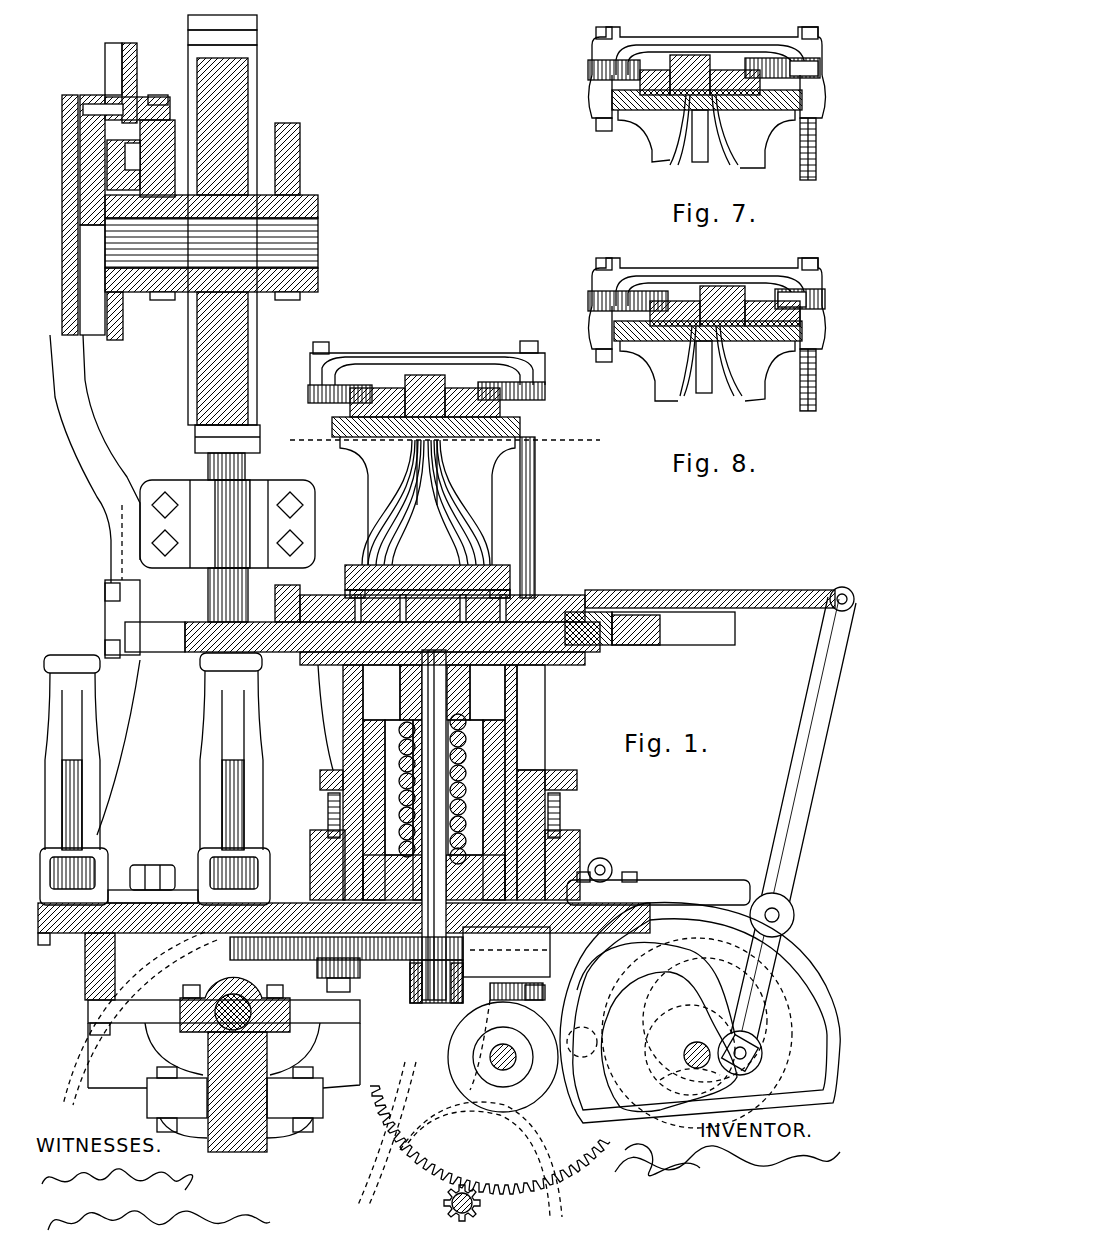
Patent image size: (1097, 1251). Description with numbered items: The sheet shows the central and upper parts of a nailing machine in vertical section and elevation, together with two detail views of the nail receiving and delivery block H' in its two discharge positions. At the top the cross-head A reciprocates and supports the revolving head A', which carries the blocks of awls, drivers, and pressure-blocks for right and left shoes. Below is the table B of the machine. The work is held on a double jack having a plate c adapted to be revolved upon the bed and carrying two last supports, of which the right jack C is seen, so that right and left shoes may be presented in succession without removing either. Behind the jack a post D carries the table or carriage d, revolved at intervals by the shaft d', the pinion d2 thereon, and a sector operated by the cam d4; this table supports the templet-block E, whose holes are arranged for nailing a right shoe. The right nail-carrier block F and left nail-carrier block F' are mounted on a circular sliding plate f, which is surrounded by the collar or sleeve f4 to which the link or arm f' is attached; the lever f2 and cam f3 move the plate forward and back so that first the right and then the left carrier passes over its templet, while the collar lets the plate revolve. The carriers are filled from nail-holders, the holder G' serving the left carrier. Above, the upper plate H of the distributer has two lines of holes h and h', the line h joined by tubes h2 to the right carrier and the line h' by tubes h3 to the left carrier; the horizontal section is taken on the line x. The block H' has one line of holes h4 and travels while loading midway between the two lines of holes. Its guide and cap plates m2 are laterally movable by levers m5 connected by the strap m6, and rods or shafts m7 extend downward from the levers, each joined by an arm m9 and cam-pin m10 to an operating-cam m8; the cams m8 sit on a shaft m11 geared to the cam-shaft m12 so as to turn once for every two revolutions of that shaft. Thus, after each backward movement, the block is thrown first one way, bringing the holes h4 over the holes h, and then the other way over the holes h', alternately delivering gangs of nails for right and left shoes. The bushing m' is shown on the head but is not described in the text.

In FIG. 1, the cross-head A is at (213, 207).
In FIG. 1, the revolving head A' is at (242, 220).
In FIG. 1, the table B is at (285, 903).
In FIG. 1, the right jack C is at (155, 779).
In FIG. 1, the plate c is at (122, 890).
In FIG. 1, the post D is at (445, 782).
In FIG. 1, the table or carriage d is at (502, 825).
In FIG. 1, the shaft d' is at (432, 789).
In FIG. 1, the pinion d2 is at (465, 950).
In FIG. 1, the cam d4 is at (332, 947).
In FIG. 1, the templet-block E is at (205, 620).
In FIG. 1, the right nail-carrier block F is at (347, 567).
In FIG. 1, the left nail-carrier block F' is at (530, 573).
In FIG. 1, the sliding plate f is at (517, 605).
In FIG. 1, the link or arm f' is at (719, 589).
In FIG. 1, the lever f2 is at (790, 802).
In FIG. 1, the cam f3 is at (700, 1015).
In FIG. 1, the collar or sleeve f4 is at (618, 572).
In FIG. 1, the nail-holder G' is at (461, 560).
In FIG. 7, the upper plate of the distributer H is at (689, 105).
In FIG. 8, the upper plate of the distributer H is at (707, 345).
In FIG. 1, the upper plate of the distributer H is at (426, 374).
In FIG. 7, the nail receiving and delivery block H' is at (707, 55).
In FIG. 8, the nail receiving and delivery block H' is at (708, 286).
In FIG. 8, the line of holes h is at (677, 361).
In FIG. 1, the line of holes h is at (426, 446).
In FIG. 7, the line of holes h' is at (708, 130).
In FIG. 8, the line of holes h' is at (723, 361).
In FIG. 7, the tubes h2 is at (652, 148).
In FIG. 8, the tubes h2 is at (682, 381).
In FIG. 1, the tubes h2 is at (388, 487).
In FIG. 7, the tubes h3 is at (730, 158).
In FIG. 8, the tubes h3 is at (728, 393).
In FIG. 1, the tubes h3 is at (470, 492).
In FIG. 7, the line of holes h4 is at (690, 55).
In FIG. 8, the line of holes h4 is at (728, 286).
In FIG. 1, the line of holes h4 is at (426, 375).
In FIG. 7, the bushing m' is at (782, 67).
In FIG. 8, the bushing m' is at (800, 298).
In FIG. 1, the guide and cap plates m2 is at (508, 380).
In FIG. 7, the levers m5 is at (588, 70).
In FIG. 8, the levers m5 is at (588, 301).
In FIG. 1, the levers m5 is at (308, 392).
In FIG. 7, the strap m6 is at (738, 34).
In FIG. 8, the strap m6 is at (690, 271).
In FIG. 1, the strap m6 is at (470, 378).
In FIG. 7, the rods or shafts m7 is at (800, 170).
In FIG. 8, the rods or shafts m7 is at (808, 380).
In FIG. 1, the rods or shafts m7 is at (535, 463).
In FIG. 1, the operating-cam m8 is at (503, 1057).
In FIG. 1, the arm m9 is at (490, 992).
In FIG. 1, the cam-pin m10 is at (528, 1000).
In FIG. 1, the shaft m11 is at (450, 1122).
In FIG. 1, the cam-shaft m12 is at (645, 1090).
In FIG. 1, the line x x is at (441, 439).